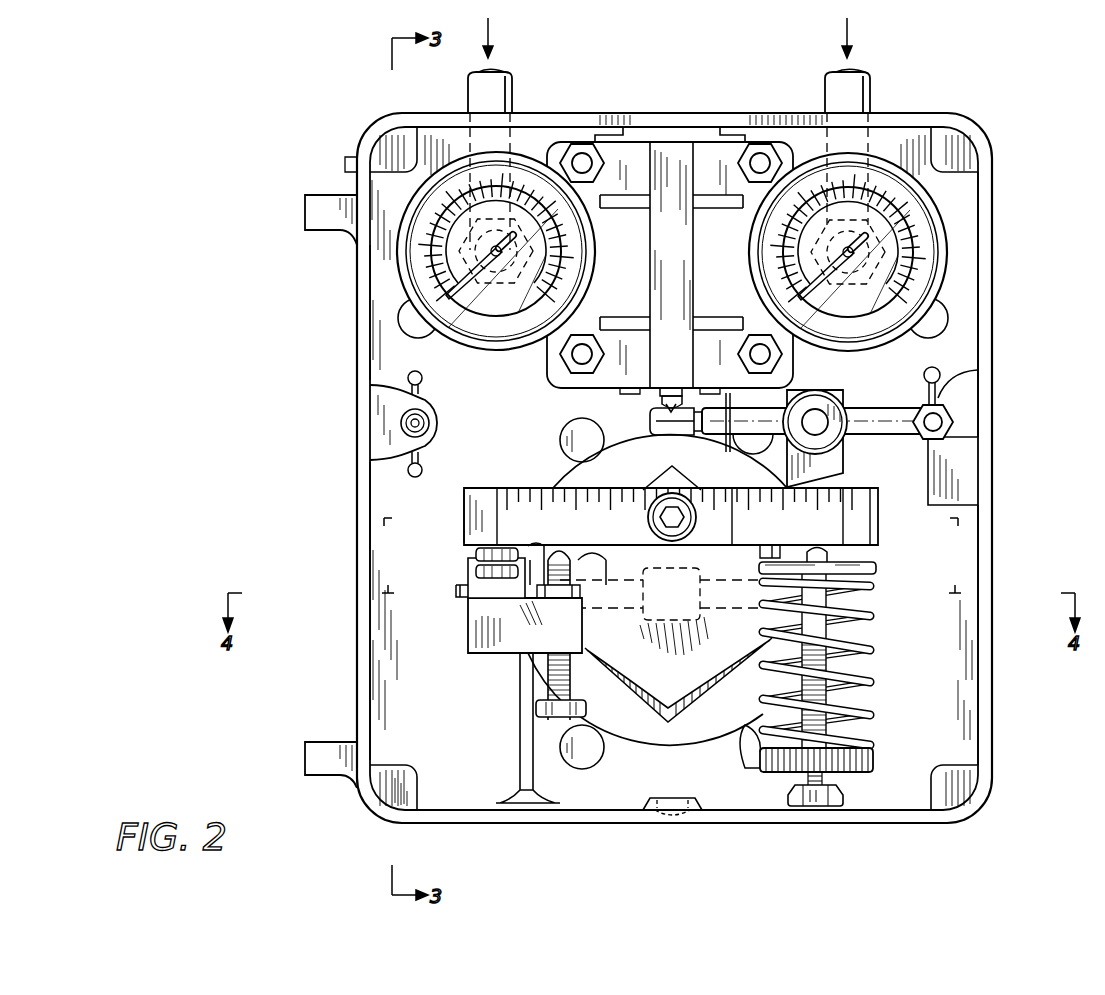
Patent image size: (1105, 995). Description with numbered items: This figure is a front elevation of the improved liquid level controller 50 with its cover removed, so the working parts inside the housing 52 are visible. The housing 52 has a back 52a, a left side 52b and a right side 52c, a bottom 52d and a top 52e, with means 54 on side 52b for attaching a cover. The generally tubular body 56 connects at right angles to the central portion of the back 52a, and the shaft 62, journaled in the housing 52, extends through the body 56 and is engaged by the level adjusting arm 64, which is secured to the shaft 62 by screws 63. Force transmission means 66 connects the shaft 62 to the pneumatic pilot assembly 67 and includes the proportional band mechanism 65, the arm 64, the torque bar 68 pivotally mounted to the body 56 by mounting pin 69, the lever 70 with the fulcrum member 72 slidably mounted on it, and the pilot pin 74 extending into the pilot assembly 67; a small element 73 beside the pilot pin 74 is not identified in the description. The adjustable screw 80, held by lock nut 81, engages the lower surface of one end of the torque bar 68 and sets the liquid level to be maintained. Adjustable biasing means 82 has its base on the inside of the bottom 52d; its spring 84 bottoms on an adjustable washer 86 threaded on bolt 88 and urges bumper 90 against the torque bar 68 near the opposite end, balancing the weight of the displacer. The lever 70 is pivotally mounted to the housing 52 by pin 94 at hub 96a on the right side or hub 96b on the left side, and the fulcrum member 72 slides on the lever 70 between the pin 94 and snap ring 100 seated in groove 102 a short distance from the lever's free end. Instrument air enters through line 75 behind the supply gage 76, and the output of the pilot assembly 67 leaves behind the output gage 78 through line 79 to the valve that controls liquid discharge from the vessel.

The liquid level controller 50 is at (222, 105).
The housing 52 is at (760, 117).
The back 52a is at (675, 759).
The side 52b is at (352, 324).
The side 52c is at (1000, 320).
The bottom 52d is at (672, 822).
The top 52e is at (695, 127).
The means for attaching a cover 54 is at (318, 195).
The body 56 is at (752, 682).
The shaft 62 is at (455, 591).
The screws 63 is at (476, 571).
The level adjusting arm 64 is at (468, 628).
The proportional band mechanism 65 is at (838, 402).
The force transmission means 66 is at (452, 505).
The pneumatic pilot assembly 67 is at (548, 359).
The torque bar 68 is at (464, 523).
The mounting pin 69 is at (660, 498).
The lever 70 is at (888, 407).
The fulcrum member 72 is at (848, 455).
The valve fitting 73 is at (662, 405).
The pilot pin 74 is at (671, 388).
The line 75 is at (513, 92).
The supply gage 76 is at (580, 255).
The output gage 78 is at (768, 255).
The line 79 is at (872, 92).
The adjustable screw 80 is at (574, 708).
The lock nut 81 is at (585, 593).
The adjustable biasing means 82 is at (882, 634).
The spring 84 is at (878, 680).
The adjustable washer 86 is at (878, 758).
The bolt 88 is at (790, 786).
The bumper 90 is at (878, 570).
The pin 94 is at (955, 423).
The hub 96a is at (958, 380).
The hub 96b is at (438, 405).
The snap ring 100 is at (725, 445).
The groove 102 is at (732, 413).